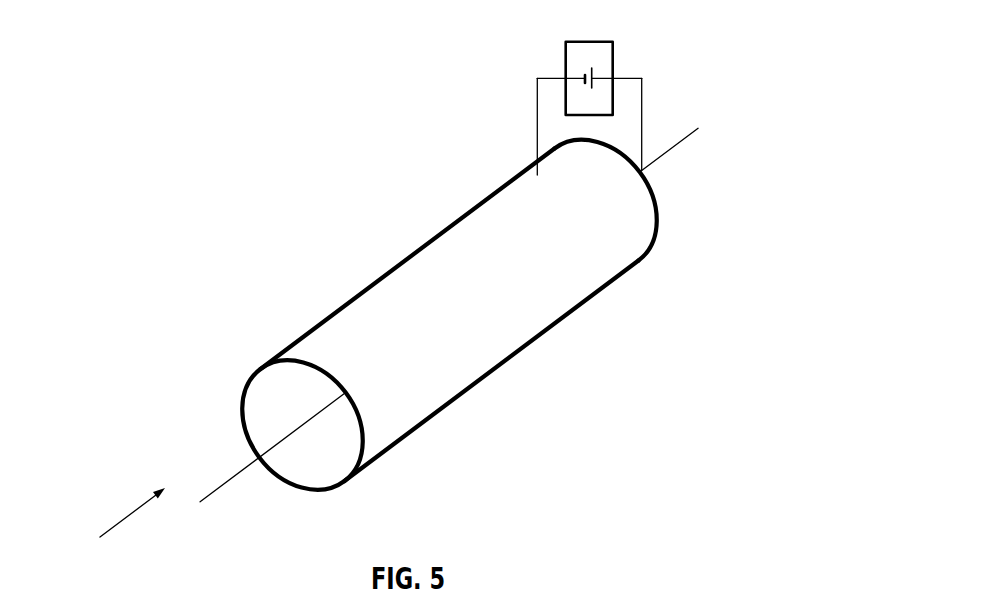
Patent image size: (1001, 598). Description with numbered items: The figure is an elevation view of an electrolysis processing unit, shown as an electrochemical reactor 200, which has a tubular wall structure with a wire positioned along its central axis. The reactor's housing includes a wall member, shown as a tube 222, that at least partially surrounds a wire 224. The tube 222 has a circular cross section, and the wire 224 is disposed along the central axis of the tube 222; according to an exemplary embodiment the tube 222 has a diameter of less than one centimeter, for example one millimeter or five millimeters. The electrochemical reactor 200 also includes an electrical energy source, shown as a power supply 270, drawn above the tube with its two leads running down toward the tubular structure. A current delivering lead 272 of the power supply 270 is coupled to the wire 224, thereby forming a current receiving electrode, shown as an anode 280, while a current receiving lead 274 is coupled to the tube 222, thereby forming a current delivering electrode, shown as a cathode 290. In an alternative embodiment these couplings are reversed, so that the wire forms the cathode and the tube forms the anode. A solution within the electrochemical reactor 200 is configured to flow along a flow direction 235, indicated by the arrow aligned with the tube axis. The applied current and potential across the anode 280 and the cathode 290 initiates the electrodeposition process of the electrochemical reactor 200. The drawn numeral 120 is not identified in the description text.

The tubular housing 120 is at (429, 314).
The electrochemical reactor 200 is at (226, 89).
The tube 222 is at (397, 425).
The wire 224 is at (232, 477).
The flow direction 235 is at (133, 512).
The power supply 270 is at (588, 41).
The current delivering lead 272 is at (642, 123).
The current receiving lead 274 is at (536, 127).
The anode 280 is at (213, 498).
The cathode 290 is at (253, 403).